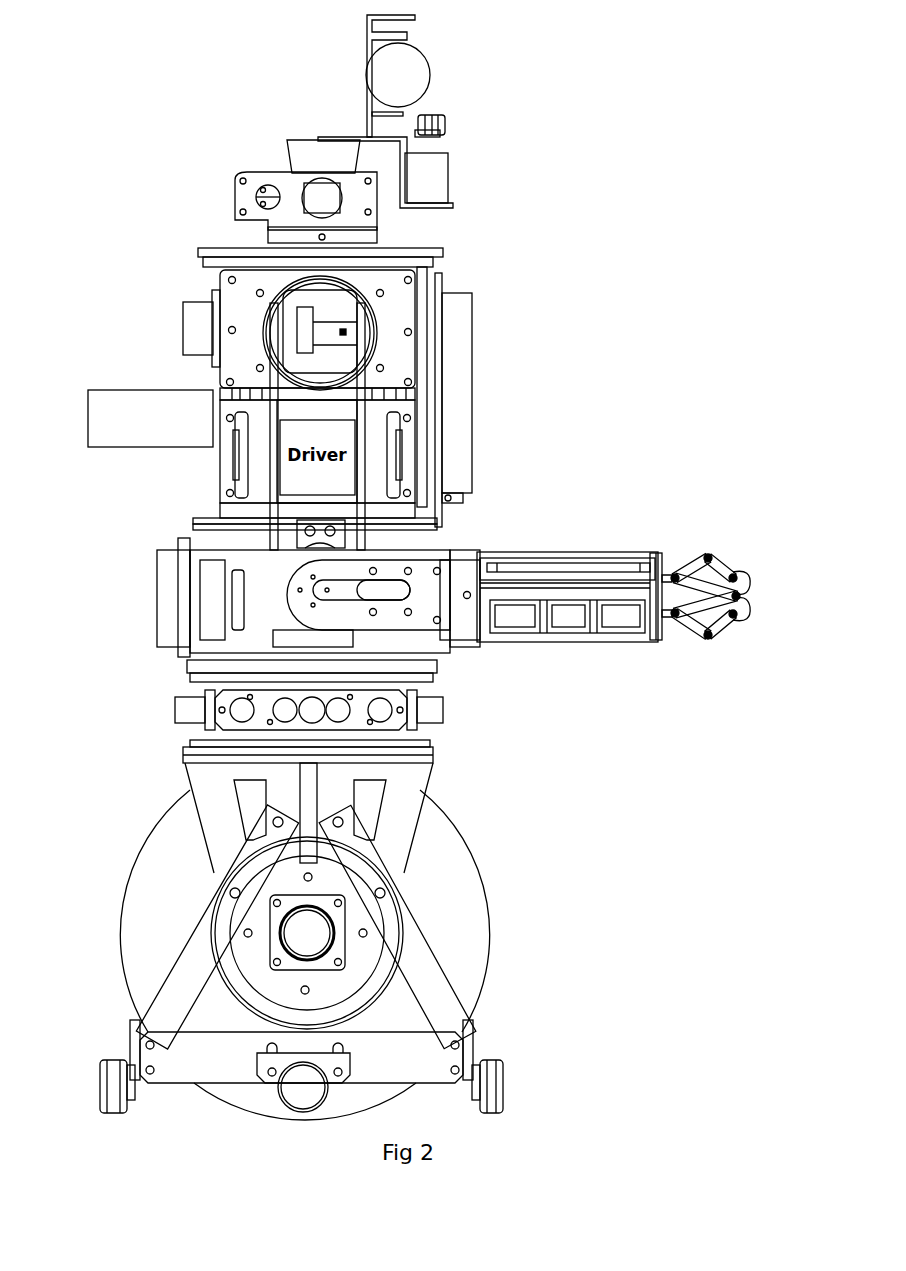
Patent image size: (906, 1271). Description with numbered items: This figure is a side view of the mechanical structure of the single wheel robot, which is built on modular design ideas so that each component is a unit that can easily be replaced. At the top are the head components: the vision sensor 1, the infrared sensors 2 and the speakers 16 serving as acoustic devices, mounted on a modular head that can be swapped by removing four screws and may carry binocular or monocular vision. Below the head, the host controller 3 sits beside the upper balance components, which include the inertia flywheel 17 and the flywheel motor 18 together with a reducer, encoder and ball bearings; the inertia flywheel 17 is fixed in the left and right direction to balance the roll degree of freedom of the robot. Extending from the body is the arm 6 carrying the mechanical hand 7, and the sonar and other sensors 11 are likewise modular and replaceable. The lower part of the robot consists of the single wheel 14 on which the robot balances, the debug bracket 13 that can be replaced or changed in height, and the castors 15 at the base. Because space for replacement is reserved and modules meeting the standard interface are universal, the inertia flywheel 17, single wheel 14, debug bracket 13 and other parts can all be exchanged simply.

The vision sensors 1 is at (398, 82).
The infrared sensors 2 is at (450, 118).
The host controller 3 is at (460, 358).
The arm 6 is at (525, 580).
The mechanical hands 7 is at (733, 565).
The sonar sensors 11 is at (318, 712).
The debug bracket 13 is at (167, 1002).
The single wheel 14 is at (448, 888).
The castor 15 is at (503, 1097).
The speakers 16 is at (311, 154).
The inertia flywheel 17 is at (283, 333).
The flywheel motor 18 is at (147, 432).